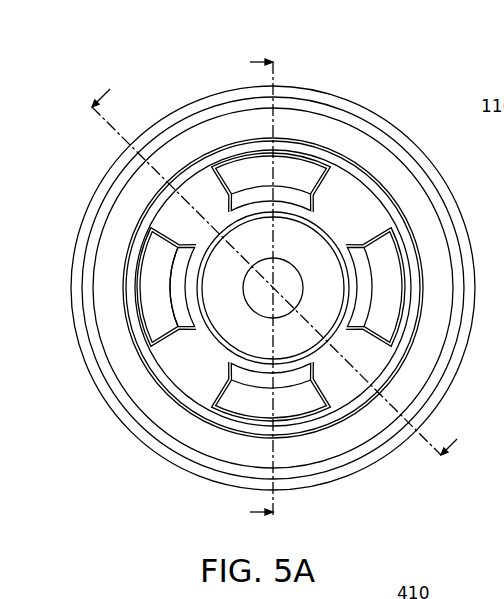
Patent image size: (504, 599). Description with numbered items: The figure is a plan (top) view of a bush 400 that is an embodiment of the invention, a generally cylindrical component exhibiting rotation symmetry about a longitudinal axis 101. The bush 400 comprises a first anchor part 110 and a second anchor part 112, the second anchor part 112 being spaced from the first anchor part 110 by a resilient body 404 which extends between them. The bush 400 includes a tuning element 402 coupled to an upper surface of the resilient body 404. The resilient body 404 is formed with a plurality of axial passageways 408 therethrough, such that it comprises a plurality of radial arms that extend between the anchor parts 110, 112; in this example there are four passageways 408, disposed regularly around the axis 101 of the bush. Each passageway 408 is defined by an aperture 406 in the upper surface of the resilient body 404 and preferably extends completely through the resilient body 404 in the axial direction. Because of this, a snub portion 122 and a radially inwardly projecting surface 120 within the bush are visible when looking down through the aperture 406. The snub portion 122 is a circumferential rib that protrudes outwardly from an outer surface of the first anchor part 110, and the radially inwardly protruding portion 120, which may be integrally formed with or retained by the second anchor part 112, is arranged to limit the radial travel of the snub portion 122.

The bush 400 is at (147, 70).
The first anchor part 110 is at (228, 253).
The second anchor part 112 is at (372, 455).
The radially inwardly protruding portion 120 is at (135, 278).
The snub portion 122 is at (177, 278).
The tuning element 402 is at (210, 383).
The resilient body 404 is at (180, 383).
The aperture 406 is at (160, 340).
The axial passageway 408 is at (150, 303).
The longitudinal axis 101 is at (503, 202).